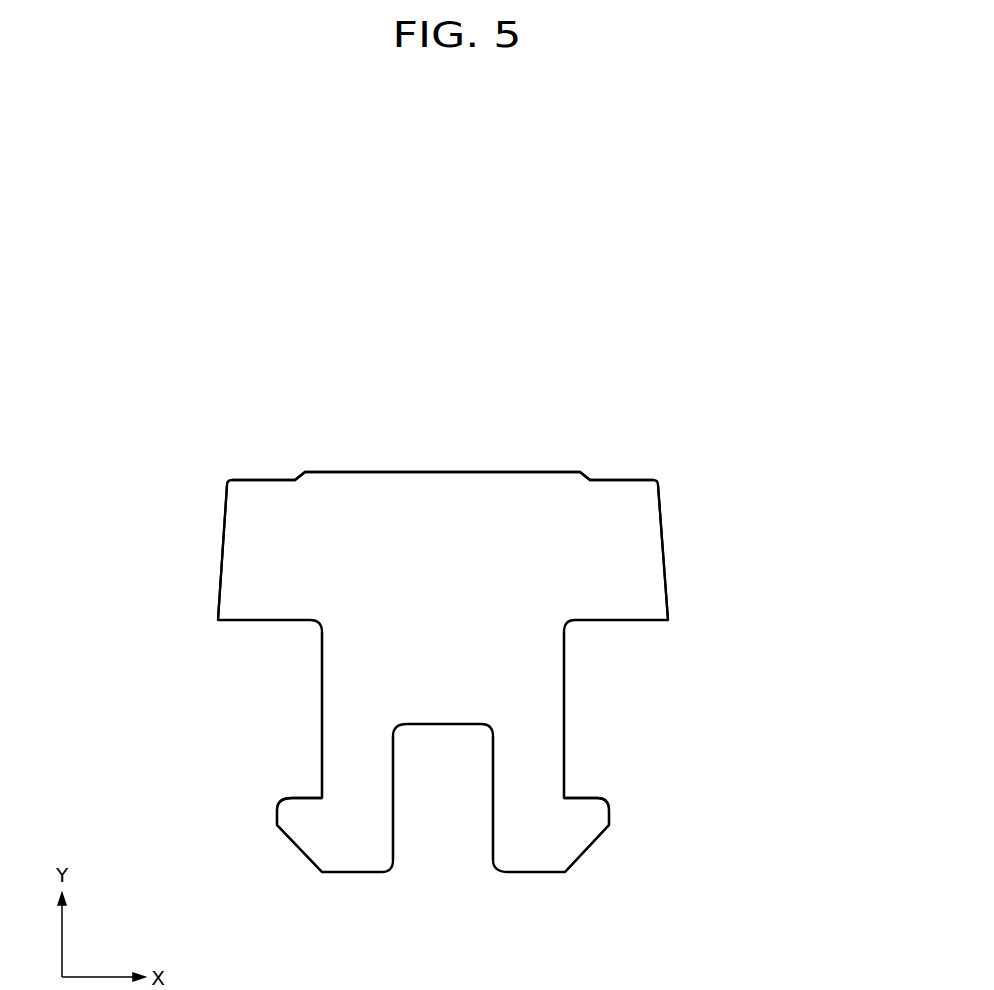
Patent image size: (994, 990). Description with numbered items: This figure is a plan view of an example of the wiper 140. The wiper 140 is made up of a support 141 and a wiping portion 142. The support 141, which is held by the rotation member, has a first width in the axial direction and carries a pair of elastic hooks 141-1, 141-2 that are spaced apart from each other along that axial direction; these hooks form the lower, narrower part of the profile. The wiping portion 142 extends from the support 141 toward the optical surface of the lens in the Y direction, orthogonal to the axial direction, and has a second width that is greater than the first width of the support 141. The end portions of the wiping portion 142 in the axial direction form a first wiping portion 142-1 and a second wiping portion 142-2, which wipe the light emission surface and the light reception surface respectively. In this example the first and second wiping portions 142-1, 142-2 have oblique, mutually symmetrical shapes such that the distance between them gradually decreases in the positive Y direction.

The wiper 140 is at (717, 480).
The support 141 is at (593, 683).
The elastic hook 141-1 is at (277, 817).
The elastic hook 141-2 is at (609, 817).
The wiping portion 142 is at (510, 472).
The first wiping portion 142-1 is at (222, 553).
The second wiping portion 142-2 is at (668, 553).